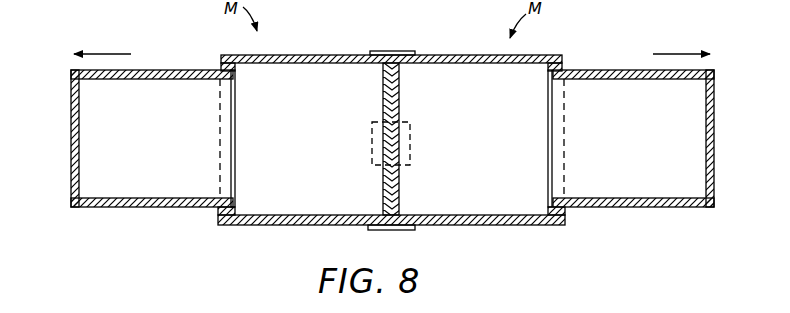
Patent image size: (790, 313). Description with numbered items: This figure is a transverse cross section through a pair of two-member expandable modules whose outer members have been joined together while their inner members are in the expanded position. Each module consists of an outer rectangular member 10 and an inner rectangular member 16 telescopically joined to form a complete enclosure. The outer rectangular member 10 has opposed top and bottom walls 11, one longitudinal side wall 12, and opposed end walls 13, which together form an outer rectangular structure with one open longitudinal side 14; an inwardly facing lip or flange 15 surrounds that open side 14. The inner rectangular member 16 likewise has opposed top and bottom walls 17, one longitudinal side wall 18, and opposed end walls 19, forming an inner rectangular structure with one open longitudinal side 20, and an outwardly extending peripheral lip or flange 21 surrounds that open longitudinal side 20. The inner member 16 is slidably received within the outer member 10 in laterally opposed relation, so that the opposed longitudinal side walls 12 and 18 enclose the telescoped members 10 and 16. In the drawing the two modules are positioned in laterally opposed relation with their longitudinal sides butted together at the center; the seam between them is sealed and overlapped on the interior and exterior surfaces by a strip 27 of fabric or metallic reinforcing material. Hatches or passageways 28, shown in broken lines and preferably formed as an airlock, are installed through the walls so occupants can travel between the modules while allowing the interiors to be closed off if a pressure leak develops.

The outer rectangular member 10 is at (388, 131).
The top and bottom walls 11 is at (483, 238).
The longitudinal side wall 12 is at (382, 87).
The end walls 13 is at (315, 150).
The open longitudinal side 14 is at (220, 172).
The inwardly facing lip or flange 15 is at (217, 215).
The inner rectangular member 16 is at (393, 120).
The top and bottom walls 17 is at (122, 80).
The longitudinal side wall 18 is at (71, 128).
The end walls 19 is at (157, 148).
The open longitudinal side 20 is at (237, 100).
The outwardly extending peripheral lip or flange 21 is at (235, 69).
The strip 27 is at (381, 51).
The hatches or passageways 28 is at (410, 125).